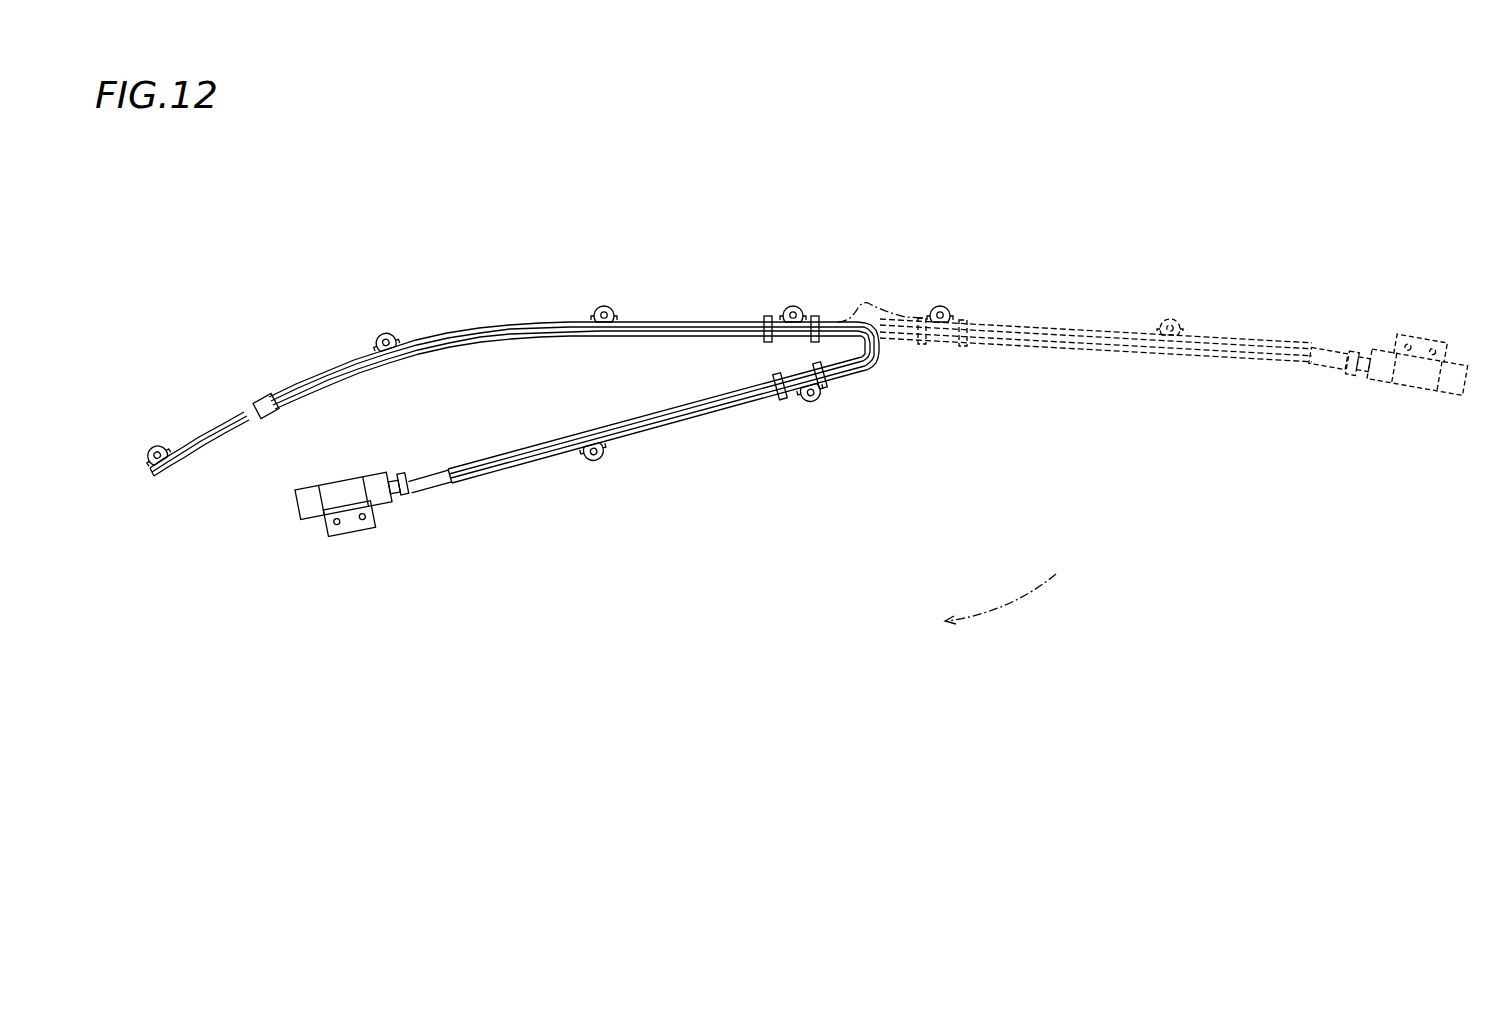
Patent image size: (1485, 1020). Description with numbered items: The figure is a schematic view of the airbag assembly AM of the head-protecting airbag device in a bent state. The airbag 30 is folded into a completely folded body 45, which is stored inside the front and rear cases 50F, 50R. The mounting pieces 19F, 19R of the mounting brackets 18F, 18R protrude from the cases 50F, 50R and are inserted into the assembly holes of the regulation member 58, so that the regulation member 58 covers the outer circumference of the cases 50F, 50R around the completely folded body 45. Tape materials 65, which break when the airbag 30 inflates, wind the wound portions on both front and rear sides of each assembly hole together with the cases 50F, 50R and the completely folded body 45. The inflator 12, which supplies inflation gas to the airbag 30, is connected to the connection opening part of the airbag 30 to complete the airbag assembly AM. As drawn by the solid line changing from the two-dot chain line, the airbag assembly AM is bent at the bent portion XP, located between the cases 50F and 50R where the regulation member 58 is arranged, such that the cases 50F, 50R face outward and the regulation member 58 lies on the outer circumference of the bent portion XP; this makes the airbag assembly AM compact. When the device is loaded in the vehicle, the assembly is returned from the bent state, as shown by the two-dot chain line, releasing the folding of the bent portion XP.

The inflator 12 is at (356, 558).
The front mounting bracket 18F is at (792, 301).
The rear mounting bracket 18R is at (810, 524).
The front mounting piece 19F is at (777, 229).
The rear mounting piece 19R is at (868, 349).
The airbag 30 is at (512, 323).
The completely folded body 45 is at (514, 341).
The front case 50F is at (514, 333).
The rear case 50R is at (1076, 322).
The regulation member 58 is at (873, 292).
The tape material 65 is at (767, 315).
The bent portion XP is at (879, 372).
The airbag assembly AM is at (1245, 192).